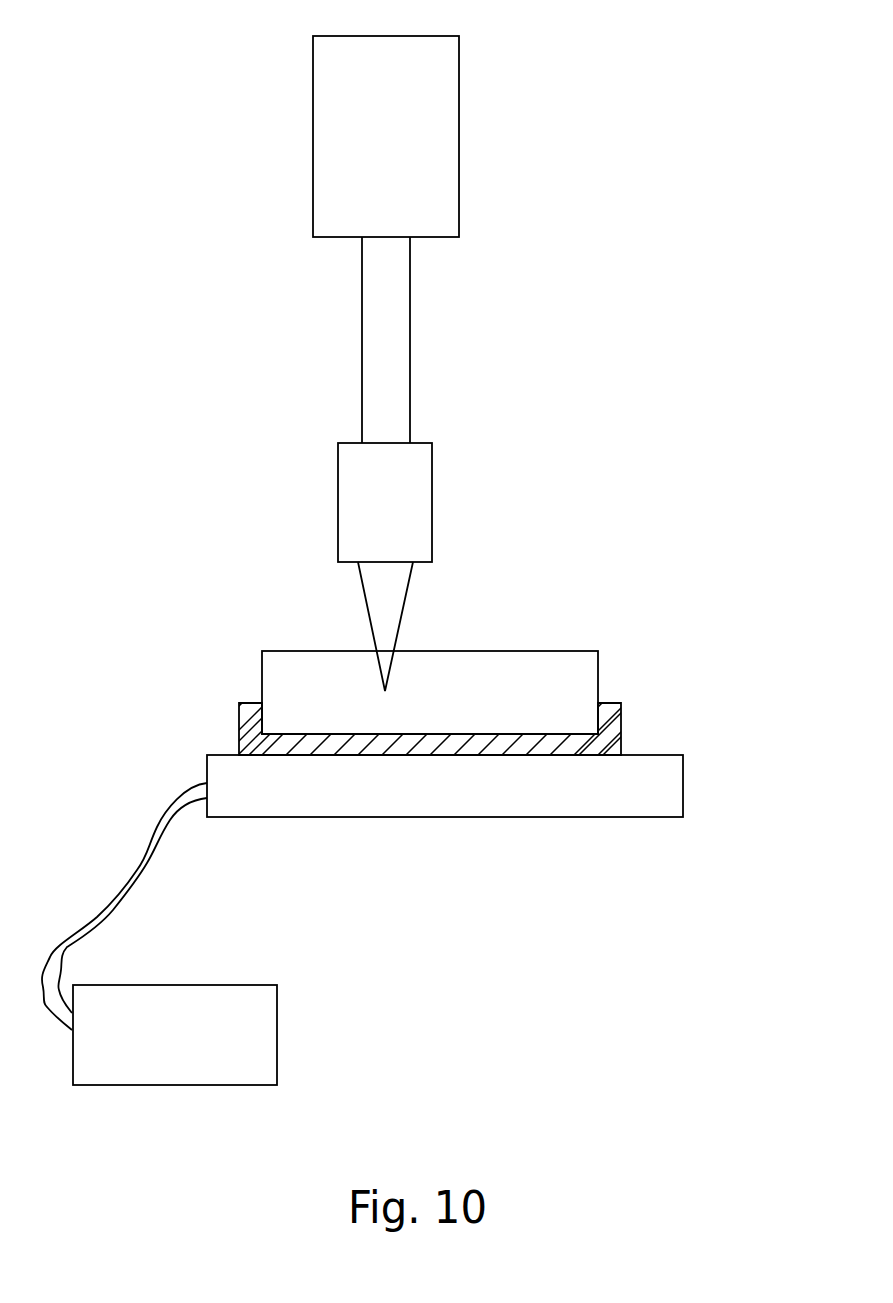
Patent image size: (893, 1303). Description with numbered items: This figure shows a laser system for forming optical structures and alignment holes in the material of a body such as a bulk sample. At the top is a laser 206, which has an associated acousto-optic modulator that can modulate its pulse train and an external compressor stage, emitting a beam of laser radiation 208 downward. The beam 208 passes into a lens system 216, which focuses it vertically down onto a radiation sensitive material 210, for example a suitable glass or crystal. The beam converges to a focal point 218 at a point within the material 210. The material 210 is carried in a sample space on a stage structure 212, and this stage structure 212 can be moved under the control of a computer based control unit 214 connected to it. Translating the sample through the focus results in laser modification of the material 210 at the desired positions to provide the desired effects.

The laser 206 is at (459, 164).
The beam of laser radiation 208 is at (410, 391).
The lens system 216 is at (432, 488).
The focal point 218 is at (385, 691).
The radiation sensitive material 210 is at (598, 680).
The stage structure 212 is at (683, 767).
The computer based control unit 214 is at (277, 1039).